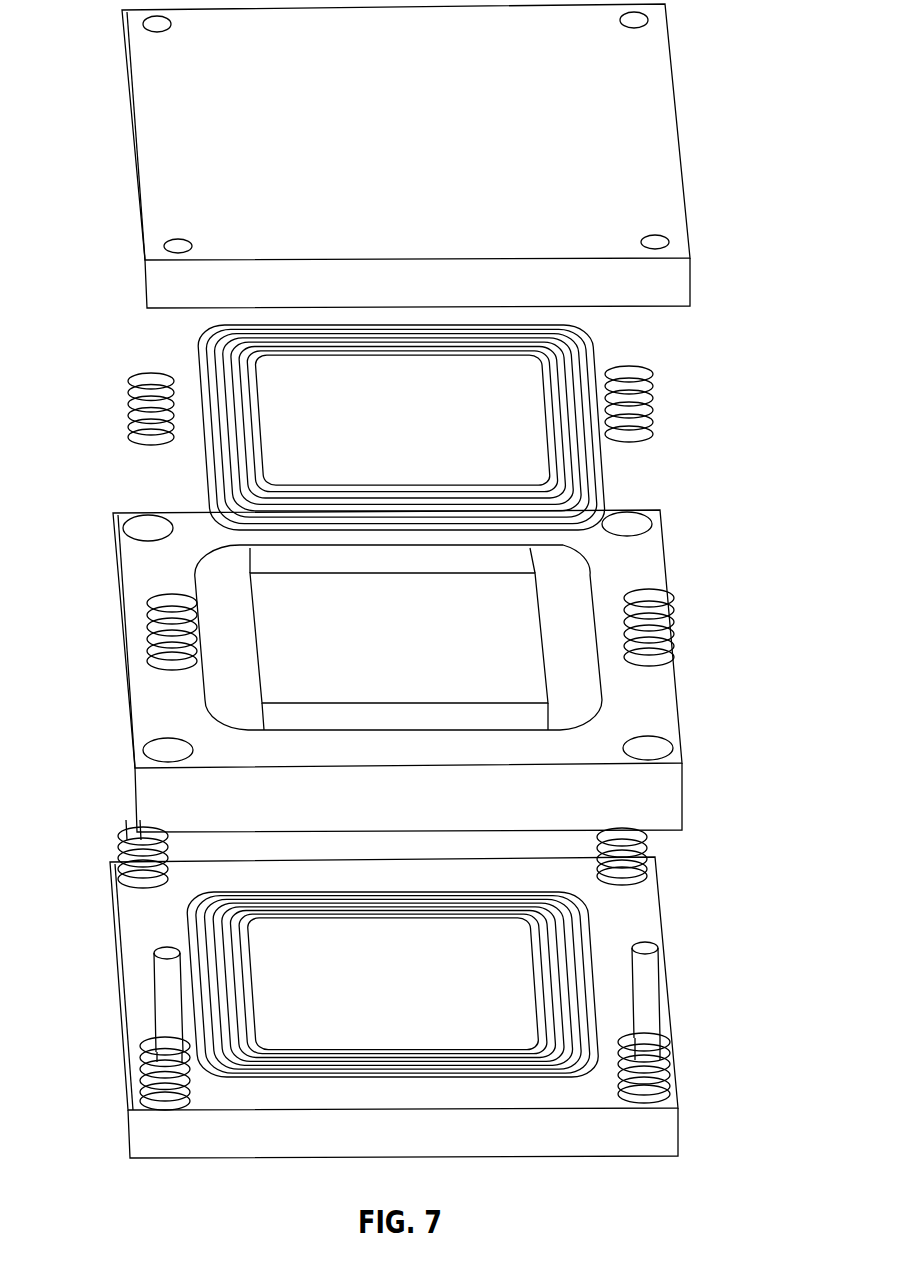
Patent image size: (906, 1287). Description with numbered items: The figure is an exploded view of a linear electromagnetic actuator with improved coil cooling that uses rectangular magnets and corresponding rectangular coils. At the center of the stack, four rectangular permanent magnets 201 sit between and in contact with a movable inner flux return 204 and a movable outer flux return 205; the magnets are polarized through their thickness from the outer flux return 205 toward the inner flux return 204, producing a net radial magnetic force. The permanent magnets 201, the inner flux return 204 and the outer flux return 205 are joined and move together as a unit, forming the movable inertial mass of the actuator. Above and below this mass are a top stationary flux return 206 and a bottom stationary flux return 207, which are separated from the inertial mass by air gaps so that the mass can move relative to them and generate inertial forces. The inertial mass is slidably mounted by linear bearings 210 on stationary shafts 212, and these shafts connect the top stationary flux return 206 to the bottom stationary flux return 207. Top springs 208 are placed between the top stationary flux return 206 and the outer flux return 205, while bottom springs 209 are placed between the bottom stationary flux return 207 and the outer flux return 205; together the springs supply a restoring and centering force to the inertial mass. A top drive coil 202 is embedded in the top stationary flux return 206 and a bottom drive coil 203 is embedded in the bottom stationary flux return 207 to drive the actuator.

The rectangular permanent magnets 201 is at (228, 657).
The top drive coil 202 is at (215, 362).
The bottom drive coil 203 is at (578, 935).
The movable inner flux return 204 is at (518, 645).
The movable outer flux return 205 is at (643, 568).
The top stationary flux return 206 is at (668, 283).
The bottom stationary flux return 207 is at (549, 1090).
The top springs 208 is at (645, 395).
The bottom springs 209 is at (645, 850).
The linear bearings 210 is at (648, 1047).
The stationary shafts 212 is at (648, 985).